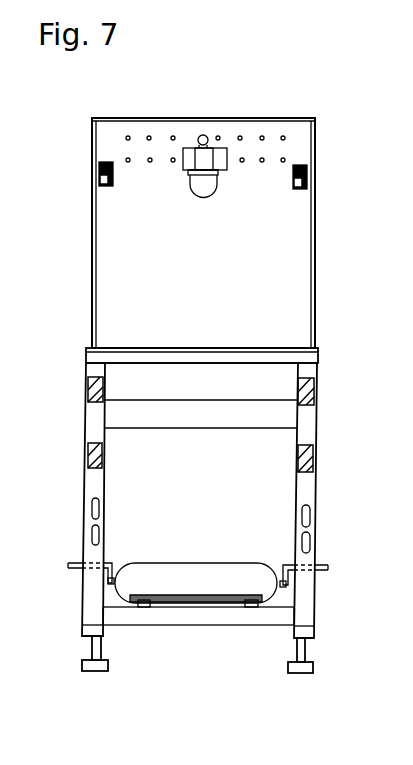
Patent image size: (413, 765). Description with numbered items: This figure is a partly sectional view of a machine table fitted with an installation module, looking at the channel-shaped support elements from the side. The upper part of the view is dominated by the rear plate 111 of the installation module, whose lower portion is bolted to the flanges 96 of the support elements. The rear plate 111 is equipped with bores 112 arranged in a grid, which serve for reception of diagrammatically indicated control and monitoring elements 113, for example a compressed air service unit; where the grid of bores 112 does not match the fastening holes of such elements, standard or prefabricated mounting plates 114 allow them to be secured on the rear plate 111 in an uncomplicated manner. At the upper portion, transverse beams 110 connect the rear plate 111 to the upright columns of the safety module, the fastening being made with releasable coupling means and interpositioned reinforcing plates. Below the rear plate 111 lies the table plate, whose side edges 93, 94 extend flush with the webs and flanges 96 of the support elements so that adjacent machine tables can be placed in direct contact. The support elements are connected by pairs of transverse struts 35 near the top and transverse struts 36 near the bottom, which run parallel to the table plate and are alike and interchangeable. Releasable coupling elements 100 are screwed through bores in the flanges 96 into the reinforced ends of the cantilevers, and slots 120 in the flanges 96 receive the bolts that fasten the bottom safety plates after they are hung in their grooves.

The rear plate 111 is at (172, 118).
The bores 112 is at (283, 138).
The central holder block 113 is at (208, 150).
The control and monitoring elements 114 is at (222, 157).
The transverse beams 110 is at (99, 174).
The side edge 93 is at (86, 363).
The side edge 94 is at (318, 362).
The flanges 96 is at (92, 478).
The releasable coupling elements 100 is at (310, 387).
The transverse struts 35 is at (290, 417).
The slots 120 is at (312, 518).
The transverse struts 36 is at (195, 612).